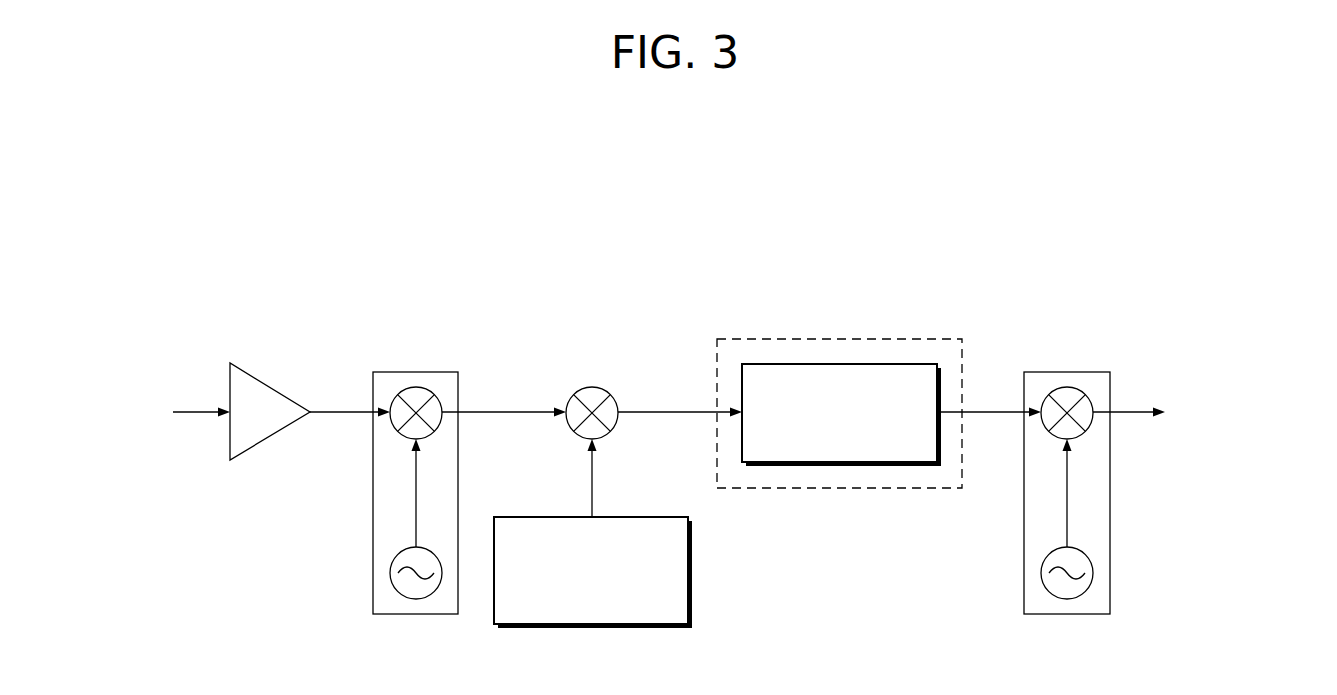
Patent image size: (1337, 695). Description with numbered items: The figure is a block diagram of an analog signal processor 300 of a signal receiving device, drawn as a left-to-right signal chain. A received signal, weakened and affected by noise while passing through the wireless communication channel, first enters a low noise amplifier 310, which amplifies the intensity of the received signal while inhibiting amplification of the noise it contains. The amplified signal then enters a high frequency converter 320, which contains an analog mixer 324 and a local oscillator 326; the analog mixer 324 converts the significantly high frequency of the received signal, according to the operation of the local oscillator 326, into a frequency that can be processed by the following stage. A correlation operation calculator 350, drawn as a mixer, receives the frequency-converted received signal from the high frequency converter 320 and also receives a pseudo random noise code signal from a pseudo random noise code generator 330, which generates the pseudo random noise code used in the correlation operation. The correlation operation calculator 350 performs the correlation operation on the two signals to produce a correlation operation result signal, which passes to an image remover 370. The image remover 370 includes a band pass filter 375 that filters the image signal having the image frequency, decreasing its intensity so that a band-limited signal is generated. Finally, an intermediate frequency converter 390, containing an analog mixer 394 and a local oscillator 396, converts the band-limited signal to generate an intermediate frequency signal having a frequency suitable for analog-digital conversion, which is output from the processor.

The analog signal processor 300 is at (1128, 239).
The low noise amplifier 310 is at (270, 385).
The high frequency converter 320 is at (397, 372).
The analog mixer 324 is at (428, 390).
The local oscillator 326 is at (390, 573).
The pseudo random noise code generator 330 is at (620, 517).
The correlation operation calculator 350 is at (600, 388).
The image remover 370 is at (897, 339).
The band pass filter 375 is at (825, 364).
The intermediate frequency converter 390 is at (1048, 372).
The analog mixer 394 is at (1078, 390).
The local oscillator 396 is at (1093, 573).